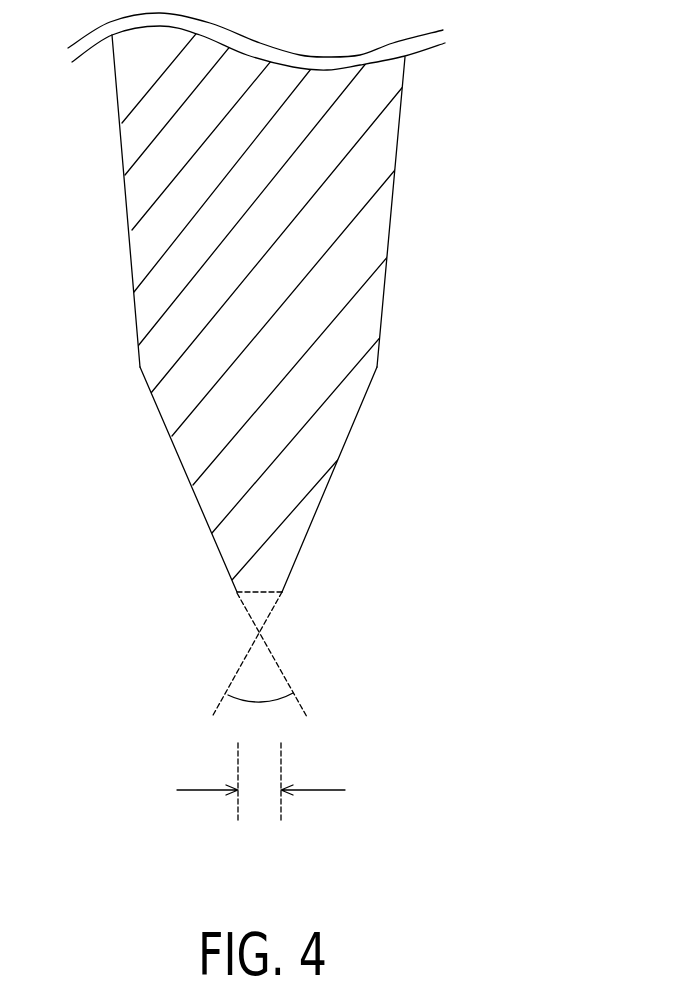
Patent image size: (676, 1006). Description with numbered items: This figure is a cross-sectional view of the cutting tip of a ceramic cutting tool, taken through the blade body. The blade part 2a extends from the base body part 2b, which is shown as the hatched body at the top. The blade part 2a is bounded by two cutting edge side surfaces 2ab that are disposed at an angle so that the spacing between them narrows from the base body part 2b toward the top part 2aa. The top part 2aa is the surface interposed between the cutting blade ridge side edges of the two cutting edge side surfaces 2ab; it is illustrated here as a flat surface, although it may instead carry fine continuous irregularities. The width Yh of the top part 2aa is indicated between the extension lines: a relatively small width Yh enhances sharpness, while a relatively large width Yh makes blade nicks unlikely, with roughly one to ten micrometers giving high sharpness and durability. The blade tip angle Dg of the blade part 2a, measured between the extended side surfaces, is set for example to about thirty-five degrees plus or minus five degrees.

The base body part 2b is at (367, 170).
The blade part 2a is at (195, 459).
The cutting edge side surfaces 2ab is at (208, 523).
The top part 2aa is at (268, 593).
The blade tip angle Dg is at (243, 701).
The width of the top part Yh is at (261, 800).